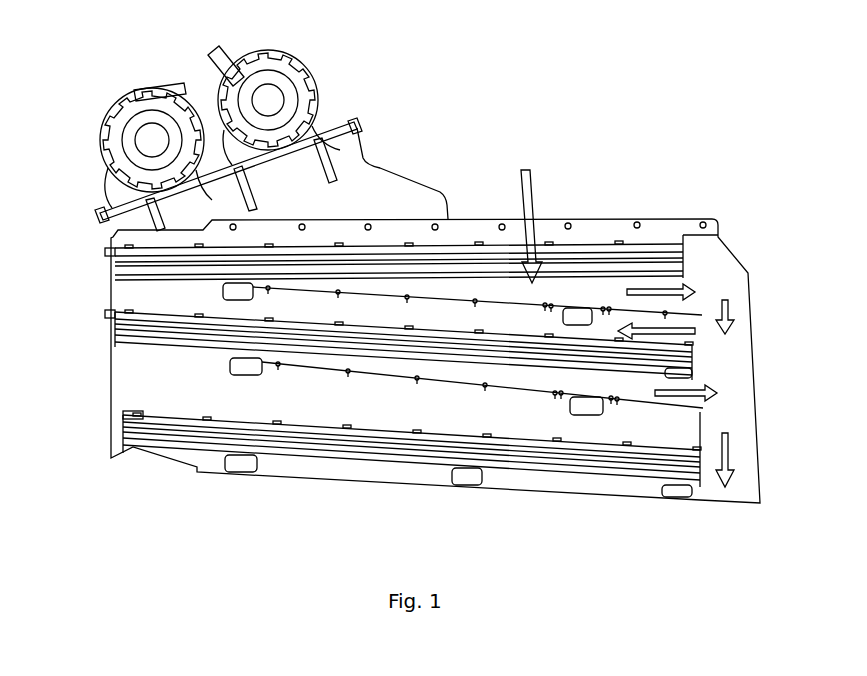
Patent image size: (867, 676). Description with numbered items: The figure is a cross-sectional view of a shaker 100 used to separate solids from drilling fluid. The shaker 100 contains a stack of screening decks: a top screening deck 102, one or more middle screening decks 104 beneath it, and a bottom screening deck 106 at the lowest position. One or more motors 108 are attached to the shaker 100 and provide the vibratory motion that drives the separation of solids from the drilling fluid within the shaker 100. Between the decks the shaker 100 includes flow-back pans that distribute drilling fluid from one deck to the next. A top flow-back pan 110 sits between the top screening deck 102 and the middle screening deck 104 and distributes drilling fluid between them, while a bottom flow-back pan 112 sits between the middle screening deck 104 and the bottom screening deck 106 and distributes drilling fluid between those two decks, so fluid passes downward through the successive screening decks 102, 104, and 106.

The shaker 100 is at (636, 138).
The top screening deck 102 is at (580, 262).
The middle screening deck 104 is at (692, 377).
The bottom screening deck 106 is at (652, 453).
The motors 108 is at (120, 107).
The top flow-back pan 110 is at (687, 313).
The bottom flow-back pan 112 is at (633, 410).